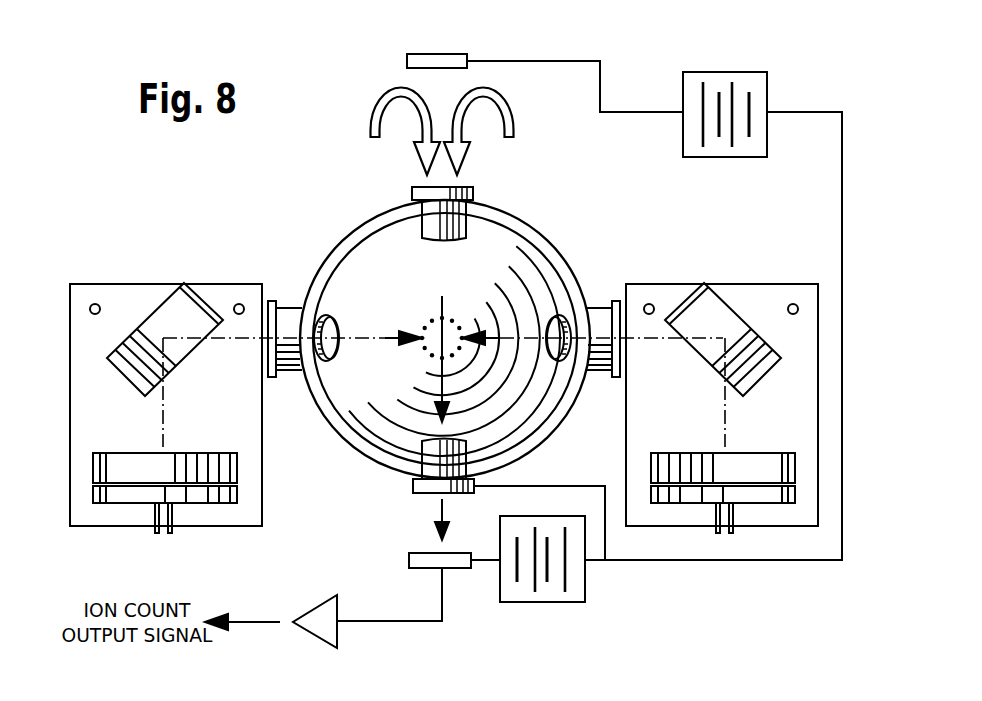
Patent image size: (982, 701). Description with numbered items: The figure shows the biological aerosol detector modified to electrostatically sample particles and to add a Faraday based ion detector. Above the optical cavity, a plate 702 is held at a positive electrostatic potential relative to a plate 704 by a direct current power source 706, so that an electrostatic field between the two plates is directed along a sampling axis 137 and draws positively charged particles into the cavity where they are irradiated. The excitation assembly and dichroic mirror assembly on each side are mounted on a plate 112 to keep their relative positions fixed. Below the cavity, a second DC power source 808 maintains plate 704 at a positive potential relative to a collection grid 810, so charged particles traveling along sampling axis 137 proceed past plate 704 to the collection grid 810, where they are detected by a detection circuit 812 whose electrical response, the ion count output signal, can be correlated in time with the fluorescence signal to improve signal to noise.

The plate 702 is at (421, 54).
The direct current (DC) power source 706 is at (768, 91).
The sampling axis 137 is at (442, 296).
The plate 112 is at (70, 351).
The plate 704 is at (413, 485).
The collection grid 810 is at (417, 553).
The DC power source 808 is at (577, 602).
The detection circuit 812 is at (310, 612).